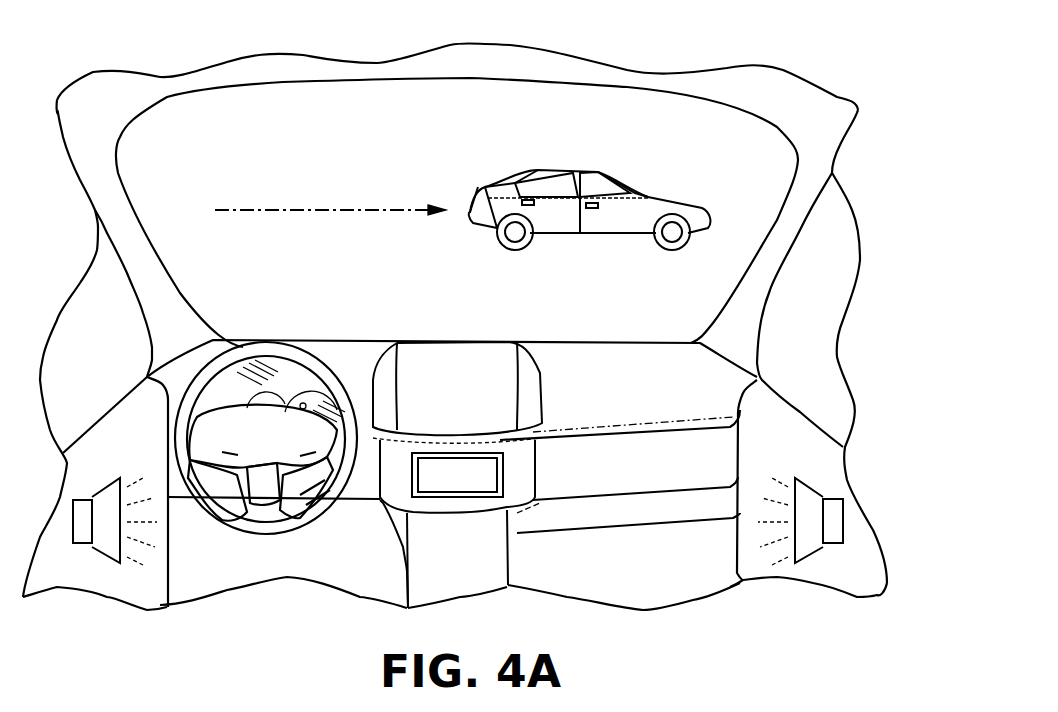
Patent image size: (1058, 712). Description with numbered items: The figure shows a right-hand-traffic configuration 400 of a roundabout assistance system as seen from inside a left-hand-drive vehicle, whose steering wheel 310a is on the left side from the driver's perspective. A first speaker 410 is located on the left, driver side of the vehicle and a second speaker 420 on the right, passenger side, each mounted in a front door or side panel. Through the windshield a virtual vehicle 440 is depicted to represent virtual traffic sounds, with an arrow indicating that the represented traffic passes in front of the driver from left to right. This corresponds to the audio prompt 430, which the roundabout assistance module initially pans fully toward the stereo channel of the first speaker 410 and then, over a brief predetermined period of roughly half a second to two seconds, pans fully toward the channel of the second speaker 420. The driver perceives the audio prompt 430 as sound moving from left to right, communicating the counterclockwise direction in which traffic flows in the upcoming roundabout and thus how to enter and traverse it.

The RHT configuration 400 is at (850, 78).
The steering wheel 310a is at (340, 378).
The audio prompt 430 is at (273, 206).
The virtual vehicle 440 is at (645, 200).
The first speaker 410 is at (82, 536).
The second speaker 420 is at (832, 533).